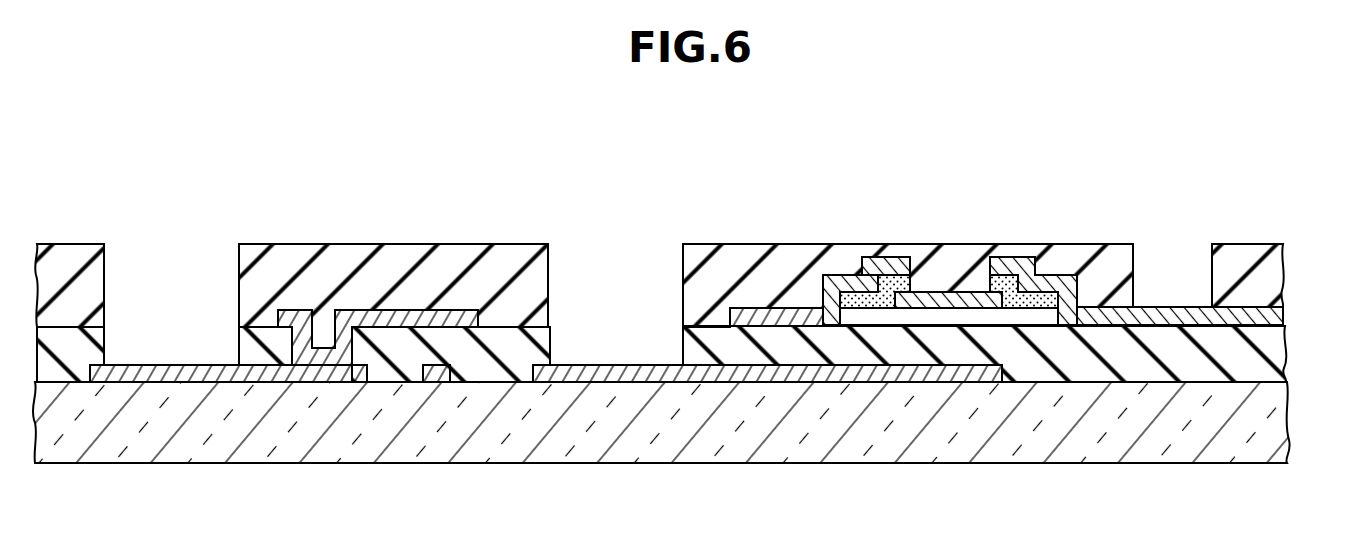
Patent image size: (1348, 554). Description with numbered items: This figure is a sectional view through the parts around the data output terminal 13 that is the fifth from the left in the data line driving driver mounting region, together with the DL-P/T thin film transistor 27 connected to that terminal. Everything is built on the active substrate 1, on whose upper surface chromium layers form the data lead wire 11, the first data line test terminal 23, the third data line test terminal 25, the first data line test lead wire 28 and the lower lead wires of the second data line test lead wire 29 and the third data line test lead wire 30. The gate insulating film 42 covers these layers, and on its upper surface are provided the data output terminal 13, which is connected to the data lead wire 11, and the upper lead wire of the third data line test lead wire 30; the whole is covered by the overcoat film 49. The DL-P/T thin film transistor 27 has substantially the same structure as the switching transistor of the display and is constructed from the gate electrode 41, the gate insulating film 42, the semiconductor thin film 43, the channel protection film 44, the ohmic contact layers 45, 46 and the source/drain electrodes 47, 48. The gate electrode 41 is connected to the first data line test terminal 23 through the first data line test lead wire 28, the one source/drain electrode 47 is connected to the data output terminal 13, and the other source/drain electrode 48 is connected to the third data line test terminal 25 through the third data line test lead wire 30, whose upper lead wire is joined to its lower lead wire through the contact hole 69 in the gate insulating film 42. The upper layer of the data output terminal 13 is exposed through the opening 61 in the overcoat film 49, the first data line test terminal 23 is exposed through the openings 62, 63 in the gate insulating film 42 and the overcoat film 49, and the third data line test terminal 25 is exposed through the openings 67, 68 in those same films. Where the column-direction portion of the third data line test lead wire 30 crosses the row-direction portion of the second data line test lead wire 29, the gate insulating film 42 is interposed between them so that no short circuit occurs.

The active substrate 1 is at (1268, 410).
The data lead wire 11 is at (1267, 382).
The data output terminal 13 is at (1165, 318).
The first data line test terminal 23 is at (614, 372).
The third data line test terminal 25 is at (160, 372).
The DL-P/T thin film transistor 27 is at (940, 208).
The first data line test lead wire 28 is at (790, 372).
The second data line test lead wire 29 is at (437, 372).
The third data line test lead wire 30 is at (410, 316).
The gate electrode 41 is at (921, 372).
The gate insulating film 42 is at (1283, 340).
The semiconductor thin film 43 is at (1052, 318).
The channel protection film 44 is at (965, 298).
The ohmic contact layer 45 is at (1002, 282).
The ohmic contact layer 46 is at (900, 272).
The source/drain electrode 47 is at (1066, 284).
The source/drain electrode 48 is at (838, 276).
The overcoat film 49 is at (1268, 277).
The opening 61 is at (1134, 268).
The opening 62 is at (551, 340).
The opening 63 is at (682, 273).
The opening 67 is at (106, 342).
The opening 68 is at (238, 270).
The contact hole 69 is at (318, 340).